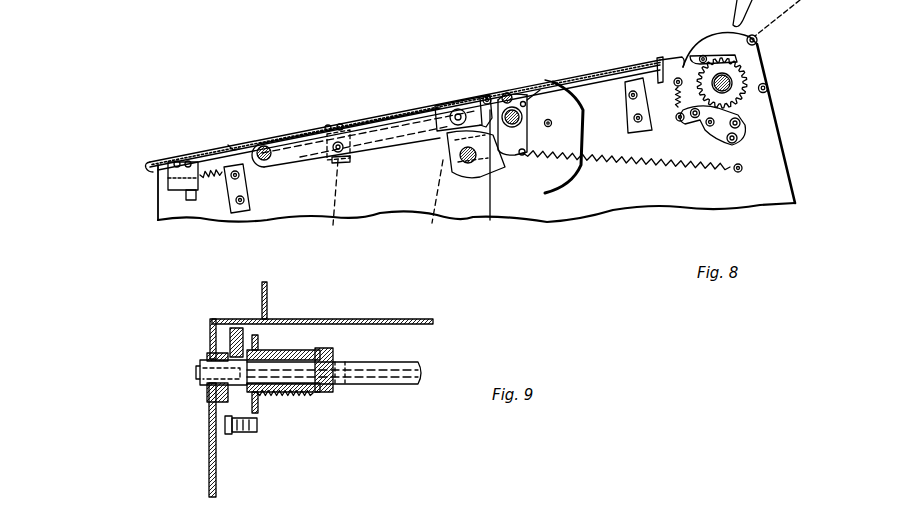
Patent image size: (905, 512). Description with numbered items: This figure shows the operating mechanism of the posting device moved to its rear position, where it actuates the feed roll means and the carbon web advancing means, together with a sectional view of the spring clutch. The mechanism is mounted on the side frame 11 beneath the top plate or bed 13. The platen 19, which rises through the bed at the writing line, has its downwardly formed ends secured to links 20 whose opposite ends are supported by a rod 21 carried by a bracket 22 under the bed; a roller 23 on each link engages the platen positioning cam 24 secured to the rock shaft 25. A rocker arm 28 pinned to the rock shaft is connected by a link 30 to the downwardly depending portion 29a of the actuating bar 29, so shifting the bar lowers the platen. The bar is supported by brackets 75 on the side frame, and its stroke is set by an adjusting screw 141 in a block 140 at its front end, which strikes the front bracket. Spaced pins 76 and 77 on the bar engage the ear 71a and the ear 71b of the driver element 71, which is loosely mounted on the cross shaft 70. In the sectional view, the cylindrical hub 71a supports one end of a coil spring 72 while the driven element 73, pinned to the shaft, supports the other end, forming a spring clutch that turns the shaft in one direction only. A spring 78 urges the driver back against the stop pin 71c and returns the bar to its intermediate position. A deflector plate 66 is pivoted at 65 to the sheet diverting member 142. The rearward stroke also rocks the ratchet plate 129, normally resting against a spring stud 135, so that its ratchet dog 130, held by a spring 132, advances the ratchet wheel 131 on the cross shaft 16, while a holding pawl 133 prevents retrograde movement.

In FIG. 8, the side frame 11 is at (476, 133).
In FIG. 9, the side frame 11 is at (209, 472).
In FIG. 8, the top plate or bed 13 is at (359, 119).
In FIG. 9, the top plate or bed 13 is at (388, 320).
In FIG. 8, the cross shaft 16 is at (733, 80).
In FIG. 8, the platen 19 is at (457, 107).
In FIG. 8, the link 20 is at (306, 158).
In FIG. 8, the rod 21 is at (271, 142).
In FIG. 8, the bracket 22 is at (233, 143).
In FIG. 8, the roller 23 is at (466, 96).
In FIG. 8, the platen positioning cam 24 is at (495, 167).
In FIG. 8, the rock shaft 25 is at (453, 162).
In FIG. 8, the rocker arm 28 is at (433, 203).
In FIG. 8, the actuating bar 29 is at (601, 43).
In FIG. 9, the actuating bar 29 is at (240, 326).
In FIG. 8, the downwardly depending portion 29a is at (368, 178).
In FIG. 8, the link 30 is at (388, 150).
In FIG. 8, the pivot 65 is at (582, 98).
In FIG. 8, the plate 66 is at (525, 102).
In FIG. 8, the cross shaft 70 is at (523, 116).
In FIG. 9, the cross shaft 70 is at (410, 385).
In FIG. 8, the driver element 71 is at (529, 131).
In FIG. 9, the driver element 71 is at (265, 414).
In FIG. 8, the cylindrical hub 71a is at (529, 100).
In FIG. 9, the cylindrical hub 71a is at (262, 400).
In FIG. 8, the ear 71b is at (503, 177).
In FIG. 8, the stop pin 71c is at (584, 132).
In FIG. 9, the coil spring 72 is at (268, 355).
In FIG. 9, the driven element 73 is at (336, 352).
In FIG. 8, the bracket 75 is at (245, 215).
In FIG. 8, the pin 76 is at (509, 94).
In FIG. 8, the pin 77 is at (489, 96).
In FIG. 8, the spring 78 is at (712, 170).
In FIG. 8, the ratchet plate 129 is at (750, 65).
In FIG. 8, the ratchet dog 130 is at (740, 137).
In FIG. 8, the ratchet wheel 131 is at (755, 70).
In FIG. 8, the spring 132 is at (723, 137).
In FIG. 8, the holding pawl 133 is at (687, 121).
In FIG. 8, the spring stud 135 is at (768, 89).
In FIG. 8, the block 140 is at (186, 194).
In FIG. 8, the adjusting screw 141 is at (168, 180).
In FIG. 8, the sheet diverting member 142 is at (547, 193).